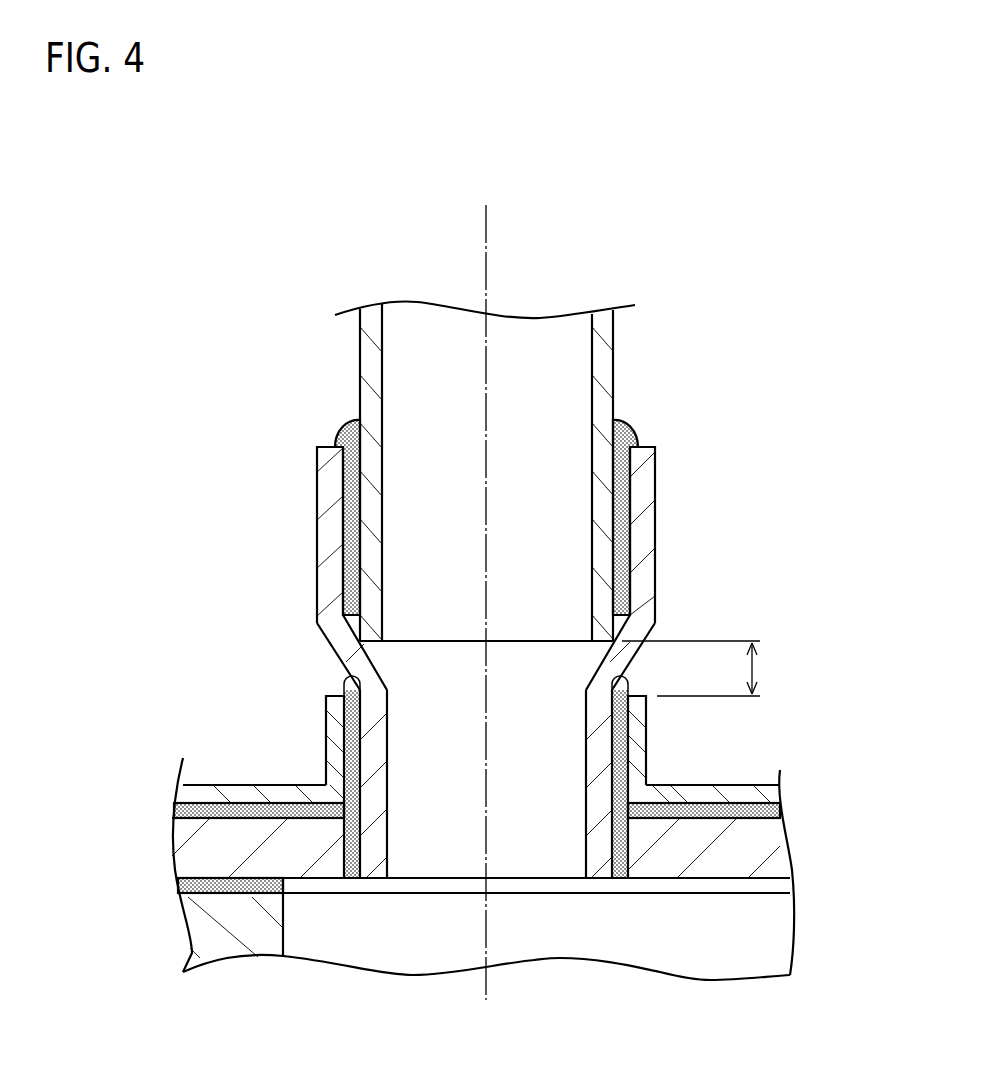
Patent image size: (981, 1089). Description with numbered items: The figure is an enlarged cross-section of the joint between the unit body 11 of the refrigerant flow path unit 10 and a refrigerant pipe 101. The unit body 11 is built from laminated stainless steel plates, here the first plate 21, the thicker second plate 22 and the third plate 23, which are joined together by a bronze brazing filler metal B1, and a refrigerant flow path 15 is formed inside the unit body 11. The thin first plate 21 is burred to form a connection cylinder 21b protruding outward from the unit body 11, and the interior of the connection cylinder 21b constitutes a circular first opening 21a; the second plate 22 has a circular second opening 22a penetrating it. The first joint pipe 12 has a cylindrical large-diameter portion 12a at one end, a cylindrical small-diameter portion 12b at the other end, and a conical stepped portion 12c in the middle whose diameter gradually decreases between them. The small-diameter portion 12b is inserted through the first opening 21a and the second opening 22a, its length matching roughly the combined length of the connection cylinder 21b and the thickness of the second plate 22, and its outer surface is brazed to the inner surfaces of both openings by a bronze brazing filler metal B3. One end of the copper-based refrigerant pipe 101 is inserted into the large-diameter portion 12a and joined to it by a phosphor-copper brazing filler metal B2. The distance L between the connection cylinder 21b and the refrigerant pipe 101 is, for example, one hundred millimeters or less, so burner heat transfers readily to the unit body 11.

The refrigerant flow path unit 10 is at (179, 337).
The refrigerant pipe 101 is at (613, 363).
The unit body 11 is at (228, 755).
The first joint pipe 12 is at (297, 505).
The large-diameter portion 12a is at (645, 482).
The small-diameter portion 12b is at (622, 753).
The stepped portion 12c is at (632, 672).
The first plate 21 is at (273, 785).
The first opening 21a is at (428, 732).
The connection cylinder 21b is at (323, 738).
The second plate 22 is at (195, 843).
The second opening 22a is at (615, 853).
The third plate 23 is at (198, 933).
The refrigerant flow path 15 is at (703, 942).
The brazing filler metal (second brazing filler metal) B1 is at (195, 808).
The brazing filler metal B2 is at (350, 472).
The brazing filler metal (first brazing filler metal) B3 is at (352, 855).
The distance L is at (700, 668).